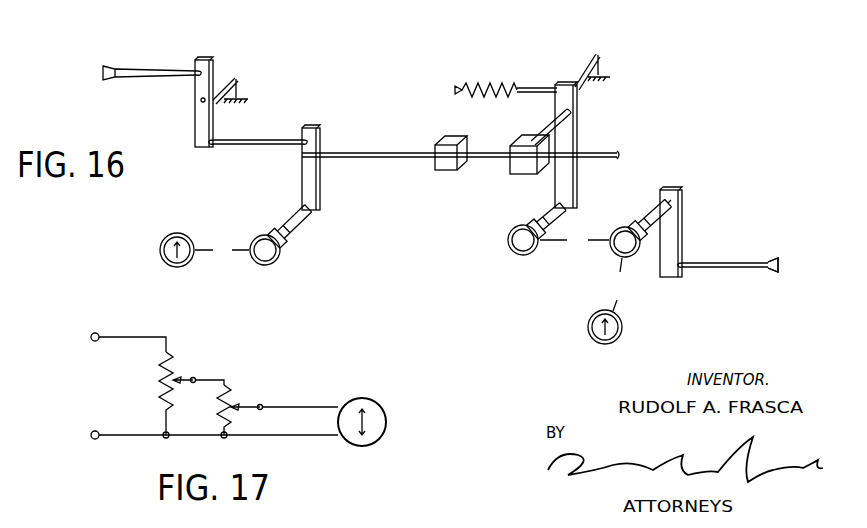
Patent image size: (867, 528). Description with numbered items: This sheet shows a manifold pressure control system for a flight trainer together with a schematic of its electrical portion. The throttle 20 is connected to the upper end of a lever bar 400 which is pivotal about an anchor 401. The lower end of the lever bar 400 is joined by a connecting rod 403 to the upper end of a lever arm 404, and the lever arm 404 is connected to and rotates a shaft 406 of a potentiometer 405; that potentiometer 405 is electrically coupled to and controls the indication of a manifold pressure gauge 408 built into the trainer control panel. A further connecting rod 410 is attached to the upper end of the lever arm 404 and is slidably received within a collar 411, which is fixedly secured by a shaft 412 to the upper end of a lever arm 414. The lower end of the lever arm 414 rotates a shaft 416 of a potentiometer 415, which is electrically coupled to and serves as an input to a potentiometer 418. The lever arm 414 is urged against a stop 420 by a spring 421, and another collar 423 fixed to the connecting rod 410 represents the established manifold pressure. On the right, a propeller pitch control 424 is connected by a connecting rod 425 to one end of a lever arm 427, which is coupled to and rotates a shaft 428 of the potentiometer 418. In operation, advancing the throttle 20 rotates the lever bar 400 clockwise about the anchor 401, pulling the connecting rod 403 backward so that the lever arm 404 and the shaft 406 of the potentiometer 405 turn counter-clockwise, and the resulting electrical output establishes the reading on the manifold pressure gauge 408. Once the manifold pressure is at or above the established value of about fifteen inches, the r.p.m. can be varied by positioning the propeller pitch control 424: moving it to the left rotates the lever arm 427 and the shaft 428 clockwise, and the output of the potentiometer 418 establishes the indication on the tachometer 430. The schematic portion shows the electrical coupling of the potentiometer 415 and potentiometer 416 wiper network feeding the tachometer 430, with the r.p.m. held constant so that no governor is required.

In FIG. 16, the throttle 20 is at (117, 65).
In FIG. 16, the lever bar 400 is at (205, 58).
In FIG. 16, the anchor 401 is at (243, 78).
In FIG. 16, the connecting rod 403 is at (276, 124).
In FIG. 16, the lever arm 404 is at (322, 138).
In FIG. 16, the potentiometer 405 is at (283, 257).
In FIG. 16, the shaft 406 is at (300, 226).
In FIG. 16, the manifold pressure gauge 408 is at (160, 254).
In FIG. 16, the connecting rod 410 is at (344, 158).
In FIG. 16, the collar 411 is at (510, 170).
In FIG. 16, the shaft 412 is at (546, 128).
In FIG. 16, the lever arm 414 is at (583, 118).
In FIG. 16, the potentiometer 415 is at (511, 236).
In FIG. 17, the potentiometer 415 is at (184, 364).
In FIG. 16, the shaft 416 is at (562, 212).
In FIG. 17, the shaft 416 is at (242, 393).
In FIG. 16, the potentiometer 418 is at (633, 226).
In FIG. 16, the stop 420 is at (604, 57).
In FIG. 16, the spring 421 is at (496, 84).
In FIG. 16, the collar 423 is at (448, 143).
In FIG. 16, the propeller pitch control 424 is at (770, 273).
In FIG. 16, the connecting rod 425 is at (746, 262).
In FIG. 16, the lever arm 427 is at (683, 197).
In FIG. 16, the shaft 428 is at (672, 212).
In FIG. 16, the tachometer 430 is at (624, 327).
In FIG. 17, the tachometer 430 is at (388, 424).